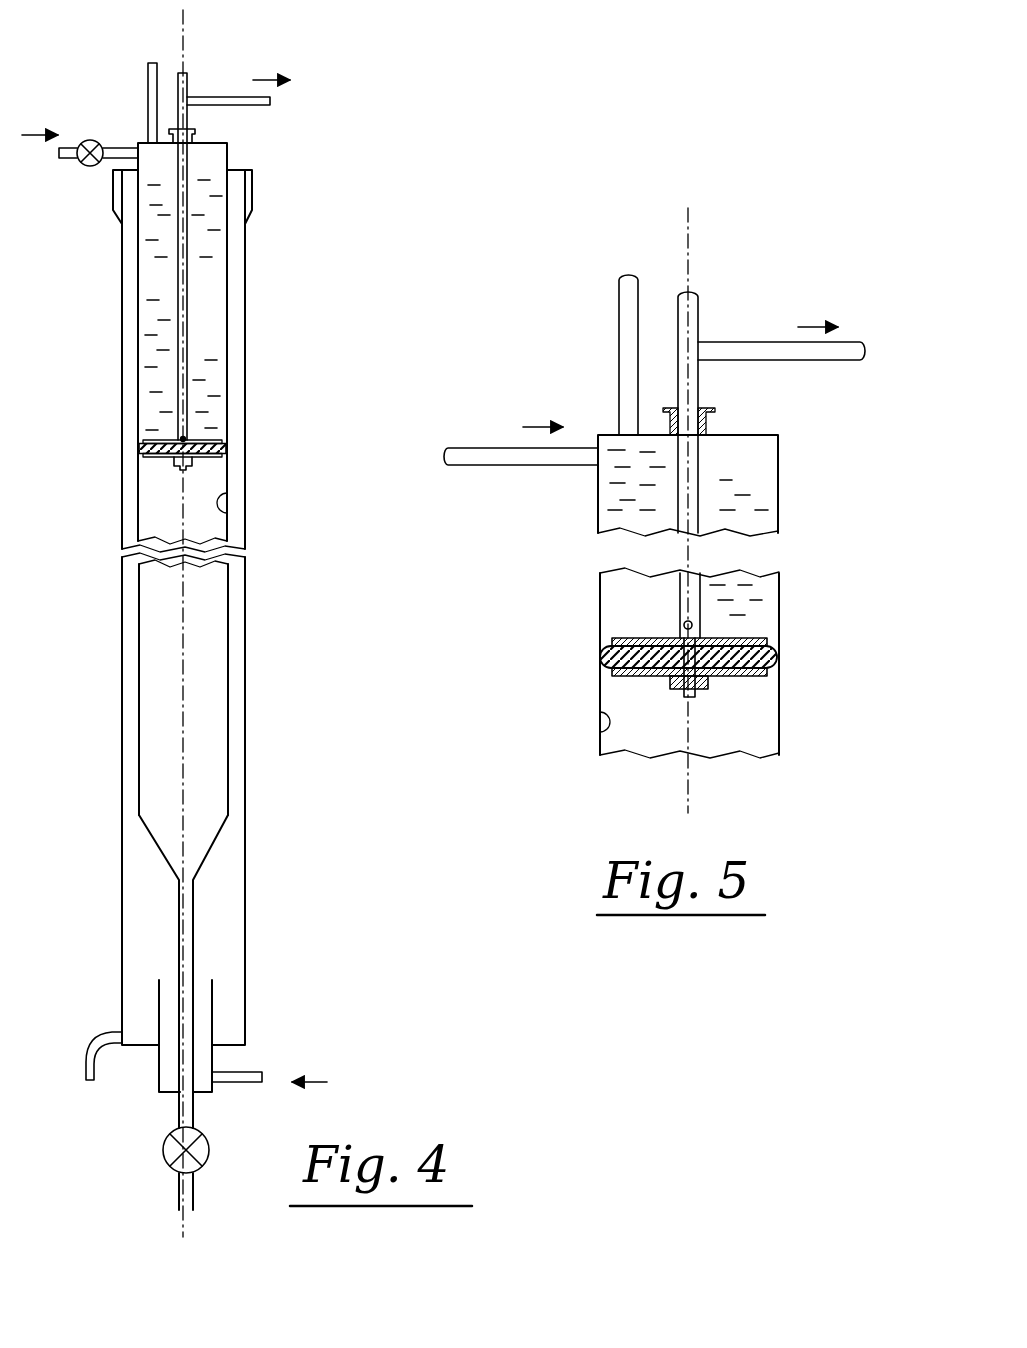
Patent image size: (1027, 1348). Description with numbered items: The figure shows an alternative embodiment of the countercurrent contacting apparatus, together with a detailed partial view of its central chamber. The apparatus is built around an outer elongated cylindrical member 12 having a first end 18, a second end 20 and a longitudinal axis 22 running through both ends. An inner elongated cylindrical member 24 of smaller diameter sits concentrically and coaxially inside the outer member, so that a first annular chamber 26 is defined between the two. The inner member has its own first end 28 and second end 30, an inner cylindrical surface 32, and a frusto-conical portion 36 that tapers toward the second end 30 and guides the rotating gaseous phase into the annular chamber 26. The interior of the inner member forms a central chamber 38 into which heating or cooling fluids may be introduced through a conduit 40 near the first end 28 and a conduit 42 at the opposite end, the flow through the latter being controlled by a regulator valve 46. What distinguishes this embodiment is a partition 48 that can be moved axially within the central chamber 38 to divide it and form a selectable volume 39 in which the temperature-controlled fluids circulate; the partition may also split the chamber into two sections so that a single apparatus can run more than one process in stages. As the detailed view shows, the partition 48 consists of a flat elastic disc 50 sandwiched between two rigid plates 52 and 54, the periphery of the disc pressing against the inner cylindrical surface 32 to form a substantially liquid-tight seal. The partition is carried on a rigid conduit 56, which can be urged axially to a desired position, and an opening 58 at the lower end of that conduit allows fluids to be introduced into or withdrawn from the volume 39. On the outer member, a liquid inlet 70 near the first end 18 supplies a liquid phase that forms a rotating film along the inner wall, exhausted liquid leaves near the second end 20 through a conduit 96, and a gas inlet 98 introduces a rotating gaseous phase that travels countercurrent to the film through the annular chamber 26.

In FIG. 4, the outer elongated cylindrical member 12 is at (253, 900).
In FIG. 4, the first end 18 is at (236, 170).
In FIG. 4, the second end 20 is at (248, 1045).
In FIG. 4, the longitudinal axis 22 is at (184, 32).
In FIG. 5, the longitudinal axis 22 is at (690, 797).
In FIG. 4, the inner elongated cylindrical member 24 is at (229, 718).
In FIG. 4, the first annular chamber 26 is at (236, 592).
In FIG. 4, the first end 28 is at (208, 140).
In FIG. 4, the second end 30 is at (194, 1120).
In FIG. 4, the inner cylindrical surface 32 is at (228, 513).
In FIG. 5, the inner cylindrical surface 32 is at (603, 733).
In FIG. 4, the frusto-conical portion 36 is at (222, 838).
In FIG. 4, the central chamber 38 is at (210, 635).
In FIG. 4, the selectable volume 39 is at (216, 320).
In FIG. 4, the conduit 40 is at (110, 158).
In FIG. 5, the conduit 40 is at (538, 463).
In FIG. 4, the conduit 42 is at (180, 1185).
In FIG. 4, the regulator valve 46 is at (165, 1153).
In FIG. 4, the partition 48 is at (234, 443).
In FIG. 5, the partition 48 is at (596, 667).
In FIG. 5, the elastic disc 50 is at (603, 650).
In FIG. 5, the rigid plate 52 is at (745, 640).
In FIG. 5, the rigid plate 54 is at (750, 674).
In FIG. 4, the conduit 56 is at (188, 112).
In FIG. 5, the conduit 56 is at (700, 390).
In FIG. 4, the opening 58 is at (191, 435).
In FIG. 5, the opening 58 is at (684, 622).
In FIG. 4, the liquid inlet 70 is at (262, 195).
In FIG. 4, the conduit 96 is at (128, 1034).
In FIG. 4, the gas inlet 98 is at (154, 1075).